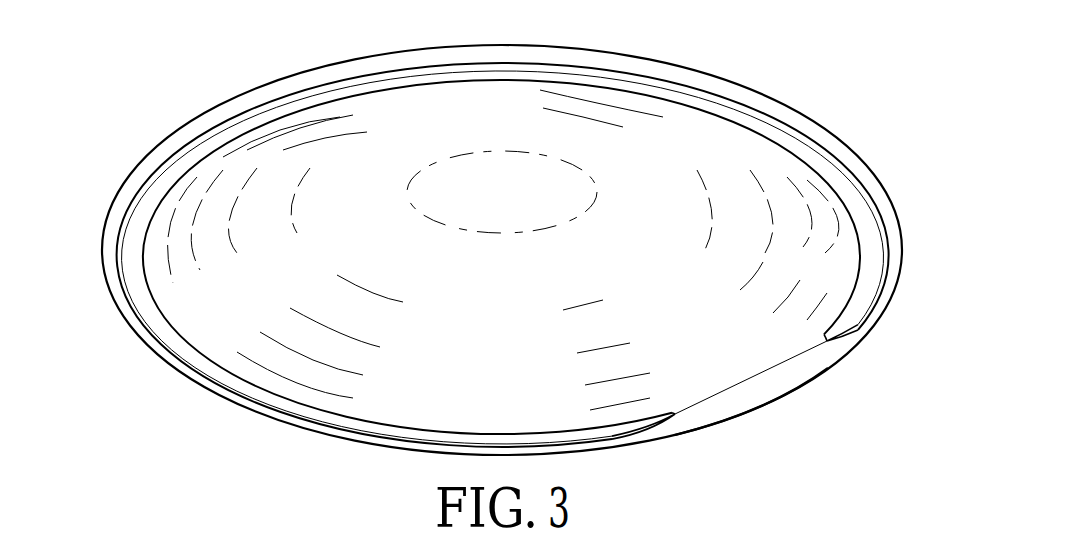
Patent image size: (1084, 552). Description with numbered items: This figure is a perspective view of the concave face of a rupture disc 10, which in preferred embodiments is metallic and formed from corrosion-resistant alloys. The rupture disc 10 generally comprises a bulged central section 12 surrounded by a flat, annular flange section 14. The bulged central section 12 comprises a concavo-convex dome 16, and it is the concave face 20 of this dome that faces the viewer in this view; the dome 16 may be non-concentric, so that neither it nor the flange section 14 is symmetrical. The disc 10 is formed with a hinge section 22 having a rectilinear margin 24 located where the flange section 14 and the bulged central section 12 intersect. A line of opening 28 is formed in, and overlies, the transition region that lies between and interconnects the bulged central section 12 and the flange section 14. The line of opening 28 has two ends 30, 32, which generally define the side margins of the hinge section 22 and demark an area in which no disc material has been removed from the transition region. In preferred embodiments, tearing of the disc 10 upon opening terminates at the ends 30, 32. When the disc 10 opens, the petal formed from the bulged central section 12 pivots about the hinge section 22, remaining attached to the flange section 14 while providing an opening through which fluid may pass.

The rupture disc 10 is at (100, 137).
The bulged central section 12 is at (735, 153).
The flange section 14 is at (115, 282).
The concavo-convex dome 16 is at (218, 343).
The concave face 20 is at (545, 273).
The hinge section 22 is at (737, 405).
The rectilinear margin 24 is at (777, 370).
The line of opening 28 is at (873, 248).
The end of the line of opening 30 is at (657, 412).
The end of the line of opening 32 is at (826, 340).